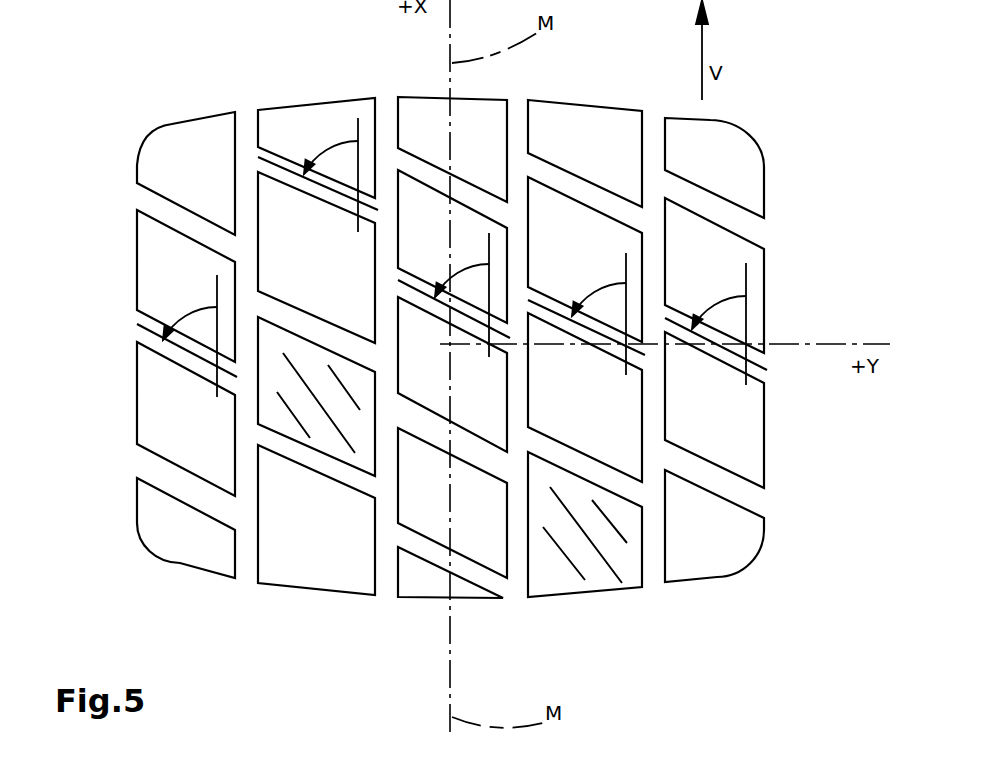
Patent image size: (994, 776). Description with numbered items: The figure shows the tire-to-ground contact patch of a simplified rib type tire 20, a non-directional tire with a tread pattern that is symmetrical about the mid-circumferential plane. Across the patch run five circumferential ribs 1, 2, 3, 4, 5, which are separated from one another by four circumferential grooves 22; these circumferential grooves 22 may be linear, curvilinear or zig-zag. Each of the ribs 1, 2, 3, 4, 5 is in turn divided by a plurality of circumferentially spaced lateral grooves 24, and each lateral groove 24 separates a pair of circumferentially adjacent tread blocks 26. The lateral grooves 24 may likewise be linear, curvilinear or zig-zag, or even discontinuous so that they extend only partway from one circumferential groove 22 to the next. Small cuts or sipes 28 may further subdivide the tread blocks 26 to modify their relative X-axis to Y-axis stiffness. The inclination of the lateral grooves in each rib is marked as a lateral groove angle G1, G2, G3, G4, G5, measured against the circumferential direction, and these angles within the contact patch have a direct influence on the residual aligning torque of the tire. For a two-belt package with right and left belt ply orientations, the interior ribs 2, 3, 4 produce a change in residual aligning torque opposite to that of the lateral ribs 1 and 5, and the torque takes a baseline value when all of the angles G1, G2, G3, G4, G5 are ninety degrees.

The rib type tire 20 is at (148, 112).
The circumferential grooves 22 is at (513, 250).
The lateral grooves 24 is at (175, 215).
The tread blocks 26 is at (562, 122).
The sipes 28 is at (300, 372).
The rib 1 is at (180, 574).
The rib 2 is at (322, 602).
The rib 3 is at (430, 604).
The rib 4 is at (619, 604).
The rib 5 is at (712, 581).
The lateral groove angle G1 is at (190, 336).
The lateral groove angle G2 is at (331, 175).
The lateral groove angle G3 is at (462, 295).
The lateral groove angle G4 is at (599, 314).
The lateral groove angle G5 is at (719, 324).